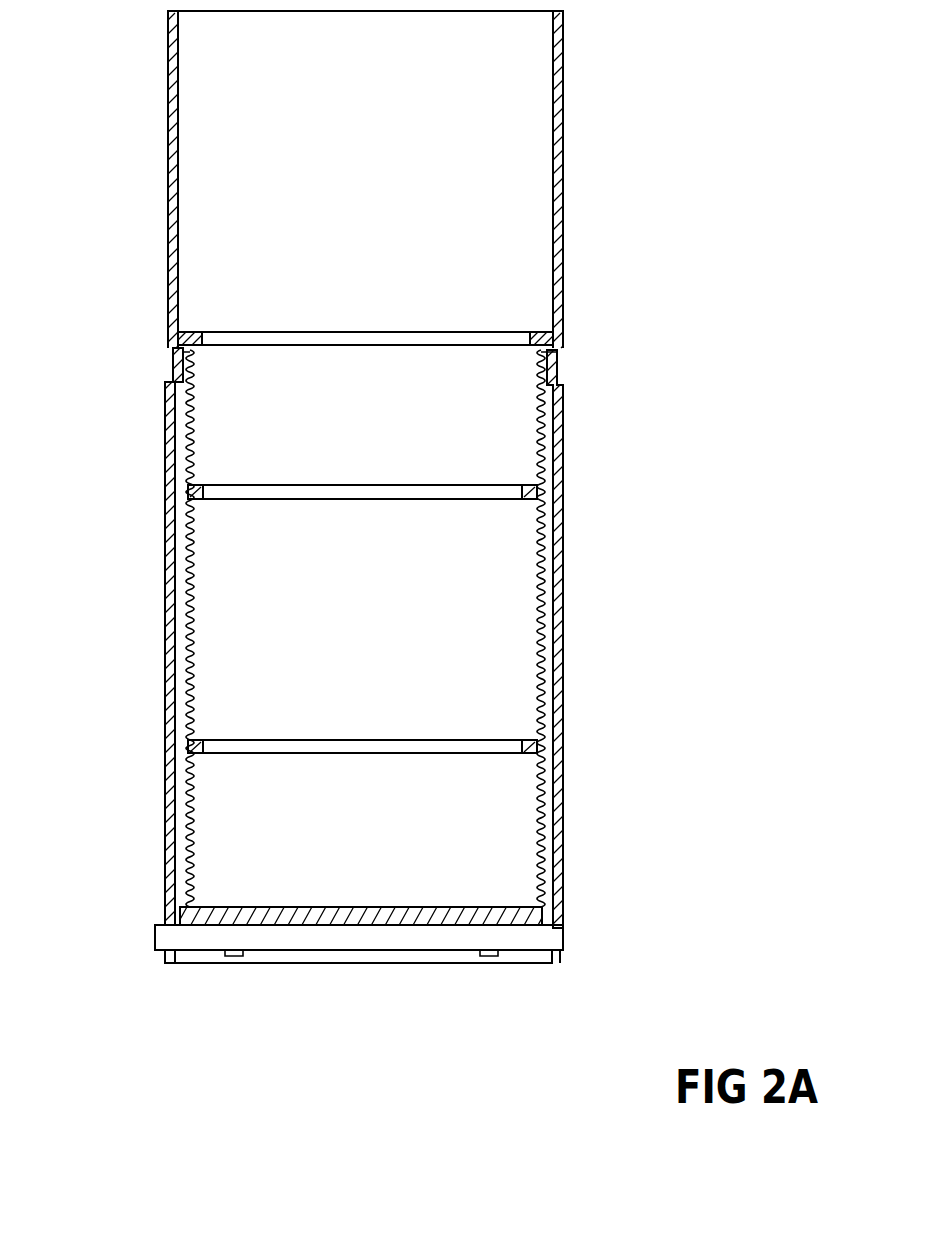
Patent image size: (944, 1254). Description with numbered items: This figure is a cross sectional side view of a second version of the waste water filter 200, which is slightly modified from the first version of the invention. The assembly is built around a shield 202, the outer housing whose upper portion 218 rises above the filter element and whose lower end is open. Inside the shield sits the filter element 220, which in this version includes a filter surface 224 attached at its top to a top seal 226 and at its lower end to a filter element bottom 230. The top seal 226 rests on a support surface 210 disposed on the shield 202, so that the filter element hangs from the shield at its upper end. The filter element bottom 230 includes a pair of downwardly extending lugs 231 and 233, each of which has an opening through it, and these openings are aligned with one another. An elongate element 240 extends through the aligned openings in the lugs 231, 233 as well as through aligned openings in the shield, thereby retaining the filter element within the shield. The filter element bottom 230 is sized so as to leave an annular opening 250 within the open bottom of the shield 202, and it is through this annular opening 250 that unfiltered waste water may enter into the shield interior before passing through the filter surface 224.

The waste water filter 200 is at (135, 342).
The shield 202 is at (168, 502).
The support surface 210 is at (557, 370).
The lid 218 is at (195, 128).
The filter element 220 is at (238, 593).
The filter surface 224 is at (540, 647).
The top seal 226 is at (540, 335).
The filter element bottom 230 is at (317, 912).
The downwardly extending lug 231 is at (240, 952).
The downwardly extending lug 233 is at (490, 956).
The elongate element 240 is at (548, 945).
The annular opening 250 is at (175, 907).